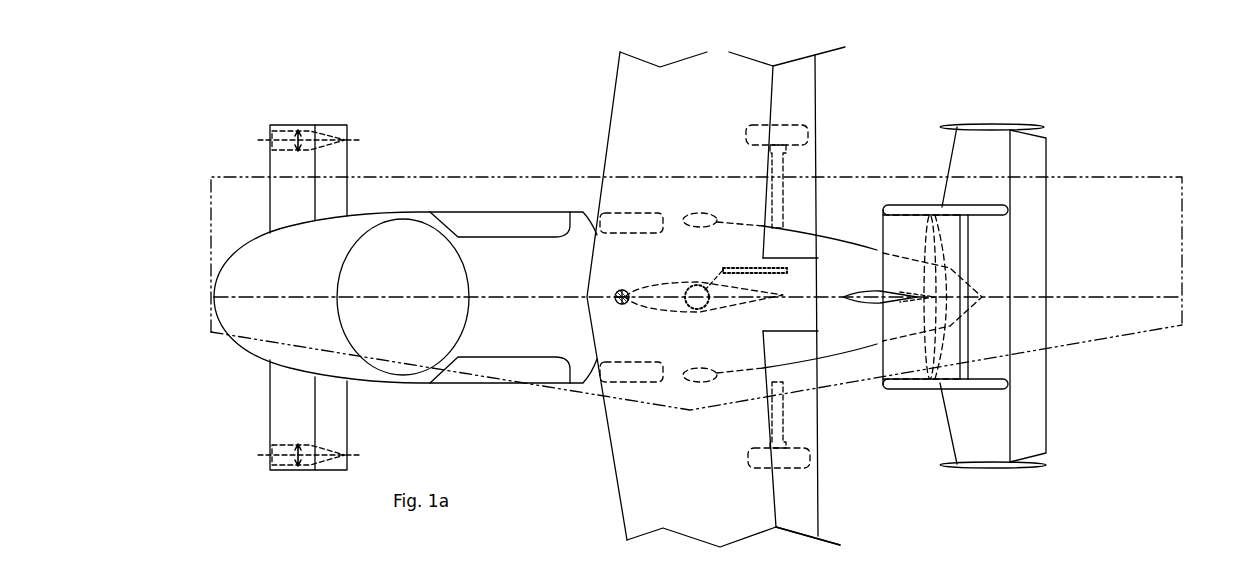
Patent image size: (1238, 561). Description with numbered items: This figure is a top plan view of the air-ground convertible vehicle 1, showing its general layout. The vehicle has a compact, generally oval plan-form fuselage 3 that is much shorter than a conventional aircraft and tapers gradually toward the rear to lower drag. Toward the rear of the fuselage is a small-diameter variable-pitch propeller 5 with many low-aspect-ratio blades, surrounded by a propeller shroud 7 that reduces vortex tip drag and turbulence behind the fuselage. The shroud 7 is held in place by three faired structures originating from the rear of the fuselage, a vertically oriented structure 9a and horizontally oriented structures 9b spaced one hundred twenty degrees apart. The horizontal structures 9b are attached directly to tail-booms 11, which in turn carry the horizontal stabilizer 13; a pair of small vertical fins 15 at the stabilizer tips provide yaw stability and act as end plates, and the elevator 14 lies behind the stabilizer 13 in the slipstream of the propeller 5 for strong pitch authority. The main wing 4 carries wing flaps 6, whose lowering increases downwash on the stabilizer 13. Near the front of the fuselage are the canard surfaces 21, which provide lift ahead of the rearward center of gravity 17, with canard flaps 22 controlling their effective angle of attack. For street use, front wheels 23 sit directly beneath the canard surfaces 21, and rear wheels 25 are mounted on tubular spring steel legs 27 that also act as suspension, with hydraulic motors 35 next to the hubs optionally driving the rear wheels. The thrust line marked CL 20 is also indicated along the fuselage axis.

The air-ground convertible vehicle 1 is at (223, 408).
The fuselage 3 is at (618, 326).
The main wing 4 is at (664, 450).
The propeller 5 is at (916, 403).
The wing flaps 6 is at (790, 511).
The propeller shroud 7 is at (890, 277).
The vertically oriented faired structure 9a is at (866, 302).
The horizontally oriented faired structures 9b is at (878, 248).
The tail-booms 11 is at (970, 383).
The horizontal stabilizer 13 is at (968, 162).
The elevator 14 is at (1027, 418).
The vertical fins 15 is at (995, 468).
The center of gravity 17 is at (620, 305).
The thrust centerline 20 is at (697, 344).
The canard surfaces 21 is at (285, 170).
The canard flaps 22 is at (333, 165).
The front wheels 23 is at (283, 133).
The rear wheels 25 is at (790, 133).
The tubular spring steel legs 27 is at (785, 208).
The hydraulic motors 35 is at (785, 160).